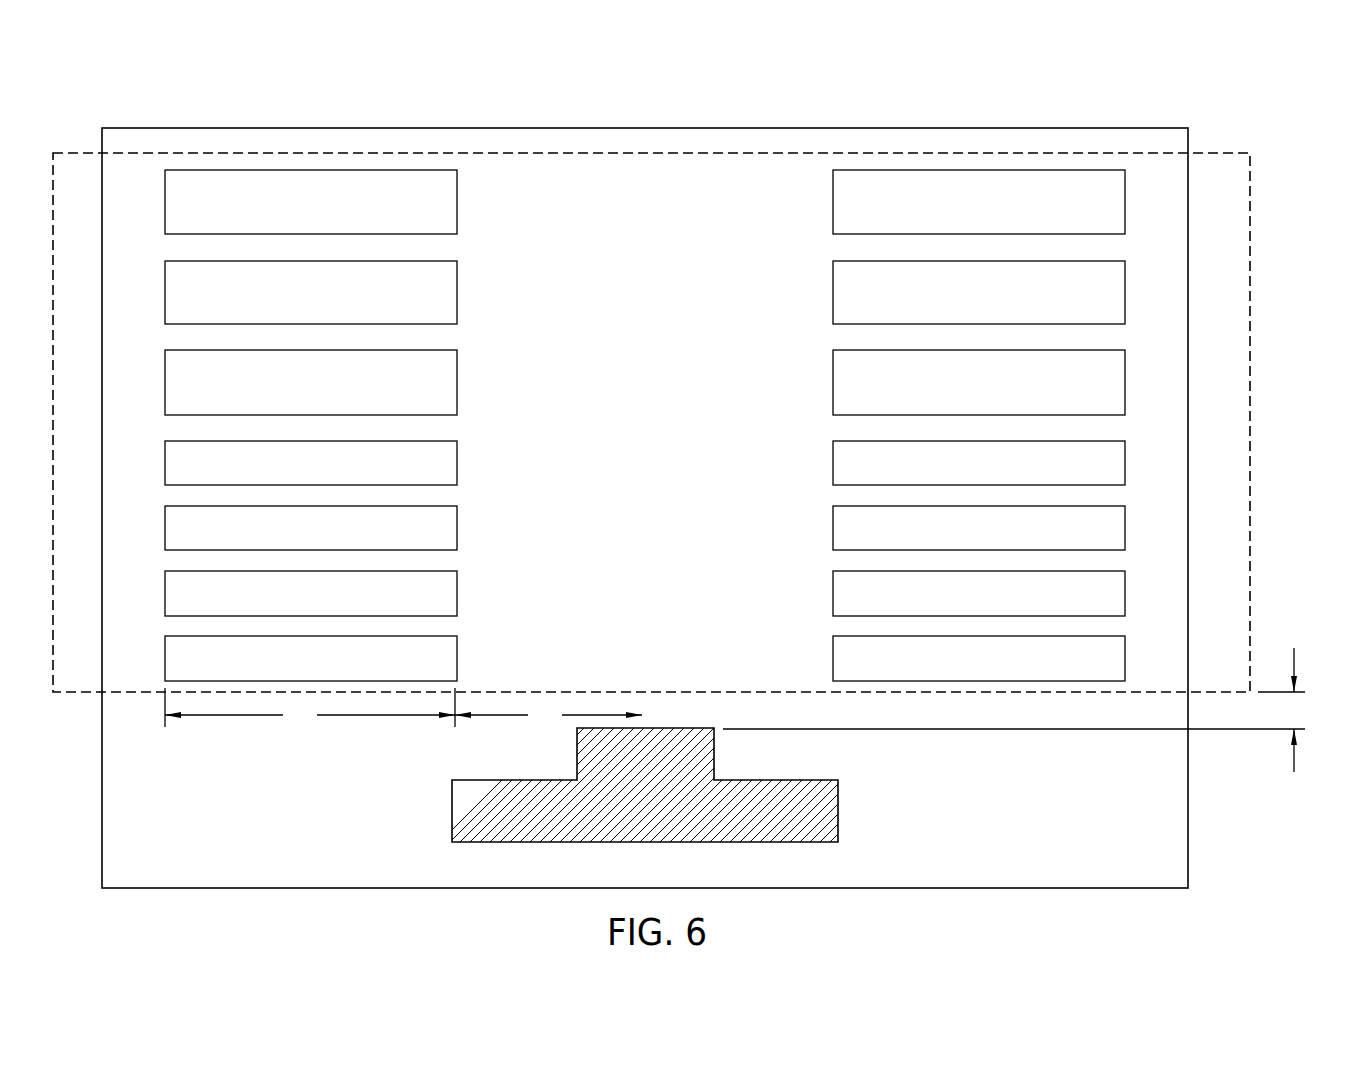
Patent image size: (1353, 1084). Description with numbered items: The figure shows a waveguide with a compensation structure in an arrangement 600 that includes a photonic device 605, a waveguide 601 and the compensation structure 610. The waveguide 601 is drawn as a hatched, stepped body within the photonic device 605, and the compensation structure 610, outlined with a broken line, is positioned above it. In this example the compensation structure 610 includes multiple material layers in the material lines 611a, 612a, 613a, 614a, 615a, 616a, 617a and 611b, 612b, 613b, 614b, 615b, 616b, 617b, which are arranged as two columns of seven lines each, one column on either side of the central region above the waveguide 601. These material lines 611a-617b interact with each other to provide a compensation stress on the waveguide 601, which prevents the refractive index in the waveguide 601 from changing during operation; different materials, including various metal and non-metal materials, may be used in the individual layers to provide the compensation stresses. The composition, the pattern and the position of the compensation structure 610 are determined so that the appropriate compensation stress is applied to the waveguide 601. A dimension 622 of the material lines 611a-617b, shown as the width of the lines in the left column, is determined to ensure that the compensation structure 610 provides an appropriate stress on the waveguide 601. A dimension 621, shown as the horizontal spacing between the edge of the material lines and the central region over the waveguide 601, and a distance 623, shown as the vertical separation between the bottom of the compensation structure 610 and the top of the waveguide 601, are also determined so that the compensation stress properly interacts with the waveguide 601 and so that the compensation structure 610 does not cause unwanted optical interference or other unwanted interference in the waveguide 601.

The arrangement 600 is at (1072, 92).
The waveguide 601 is at (623, 808).
The photonic device 605 is at (1108, 835).
The compensation structure 610 is at (1250, 252).
The material line 611a is at (293, 212).
The material line 612a is at (293, 302).
The material line 613a is at (293, 392).
The material line 614a is at (293, 475).
The material line 615a is at (293, 541).
The material line 616a is at (293, 605).
The material line 617a is at (293, 670).
The material line 611b is at (961, 212).
The material line 612b is at (961, 302).
The material line 613b is at (961, 392).
The material line 614b is at (961, 475).
The material line 615b is at (961, 541).
The material line 616b is at (961, 605).
The material line 617b is at (961, 670).
The dimension 621 is at (548, 715).
The dimension 622 is at (310, 707).
The distance 623 is at (1028, 710).